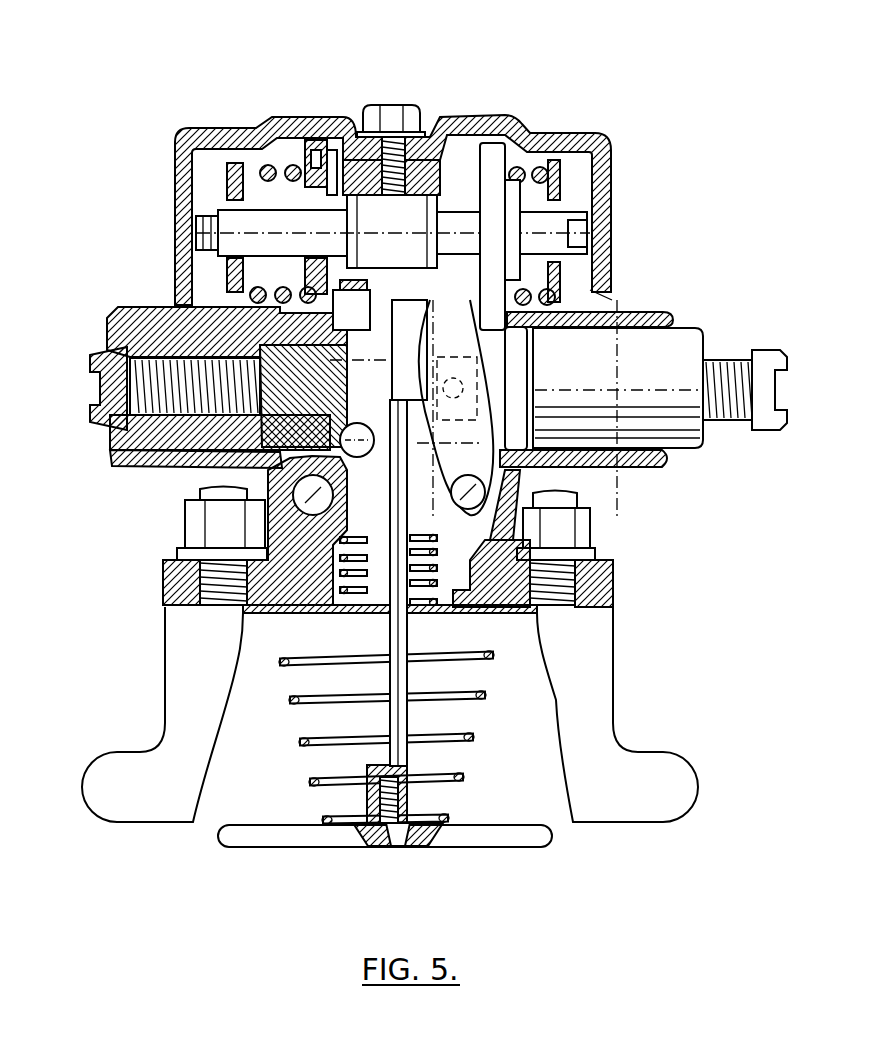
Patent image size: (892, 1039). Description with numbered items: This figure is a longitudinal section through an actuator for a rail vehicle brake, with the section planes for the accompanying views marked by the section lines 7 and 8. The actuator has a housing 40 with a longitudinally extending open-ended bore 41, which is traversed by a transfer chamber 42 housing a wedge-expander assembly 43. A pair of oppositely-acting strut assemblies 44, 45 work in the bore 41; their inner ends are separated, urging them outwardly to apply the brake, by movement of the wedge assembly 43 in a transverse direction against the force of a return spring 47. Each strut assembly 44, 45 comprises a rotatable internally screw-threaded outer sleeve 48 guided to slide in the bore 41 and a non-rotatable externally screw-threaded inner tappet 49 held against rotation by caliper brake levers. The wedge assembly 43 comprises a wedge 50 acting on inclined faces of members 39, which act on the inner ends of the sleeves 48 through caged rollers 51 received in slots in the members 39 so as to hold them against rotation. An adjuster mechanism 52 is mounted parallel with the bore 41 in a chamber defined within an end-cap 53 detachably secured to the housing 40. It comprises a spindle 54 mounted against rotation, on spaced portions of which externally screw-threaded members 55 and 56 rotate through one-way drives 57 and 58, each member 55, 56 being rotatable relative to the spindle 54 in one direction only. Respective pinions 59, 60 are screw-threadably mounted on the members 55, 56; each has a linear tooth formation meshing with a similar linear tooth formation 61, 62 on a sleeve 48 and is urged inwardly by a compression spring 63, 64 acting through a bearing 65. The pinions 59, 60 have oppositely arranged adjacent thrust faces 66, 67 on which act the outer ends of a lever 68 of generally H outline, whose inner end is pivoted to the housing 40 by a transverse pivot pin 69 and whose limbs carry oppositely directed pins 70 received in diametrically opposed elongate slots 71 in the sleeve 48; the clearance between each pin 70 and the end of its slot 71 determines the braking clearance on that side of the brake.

The section line 7- 7 is at (390, 100).
The section line 8- 8 is at (453, 112).
The members with inclined faces 39 is at (280, 450).
The housing 40 is at (615, 460).
The bore 41 is at (600, 312).
The transfer chamber 42 is at (332, 548).
The wedge-expander assembly 43 is at (398, 416).
The strut assembly 44 is at (150, 432).
The strut assembly 45 is at (657, 370).
The return spring 47 is at (468, 776).
The outer sleeve 48 is at (147, 343).
The inner tappet 49 is at (115, 390).
The wedge 50 is at (399, 533).
The caged rollers 51 is at (343, 430).
The adjuster mechanism 52 is at (427, 185).
The end-cap 53 is at (598, 148).
The spindle 54 is at (250, 233).
The externally screw-threaded member 55 is at (262, 182).
The externally screw-threaded member 56 is at (458, 195).
The one-way drive 57 is at (281, 185).
The one-way drive 58 is at (390, 227).
The pinion 59 is at (322, 190).
The pinion 60 is at (541, 168).
The linear tooth formation 61 is at (328, 420).
The linear tooth formation 62 is at (552, 280).
The compression spring 63 is at (233, 175).
The compression spring 64 is at (578, 137).
The bearing 65 is at (312, 160).
The thrust face 66 is at (355, 158).
The thrust face 67 is at (492, 163).
The lever 68 is at (200, 523).
The transverse pivot pin 69 is at (305, 512).
The pins 70 is at (451, 494).
The elongate slots 71 is at (478, 358).